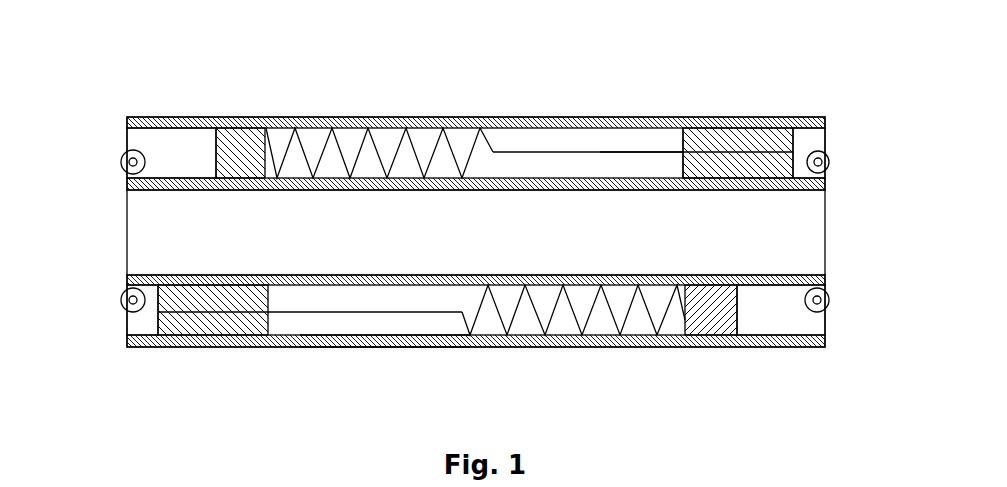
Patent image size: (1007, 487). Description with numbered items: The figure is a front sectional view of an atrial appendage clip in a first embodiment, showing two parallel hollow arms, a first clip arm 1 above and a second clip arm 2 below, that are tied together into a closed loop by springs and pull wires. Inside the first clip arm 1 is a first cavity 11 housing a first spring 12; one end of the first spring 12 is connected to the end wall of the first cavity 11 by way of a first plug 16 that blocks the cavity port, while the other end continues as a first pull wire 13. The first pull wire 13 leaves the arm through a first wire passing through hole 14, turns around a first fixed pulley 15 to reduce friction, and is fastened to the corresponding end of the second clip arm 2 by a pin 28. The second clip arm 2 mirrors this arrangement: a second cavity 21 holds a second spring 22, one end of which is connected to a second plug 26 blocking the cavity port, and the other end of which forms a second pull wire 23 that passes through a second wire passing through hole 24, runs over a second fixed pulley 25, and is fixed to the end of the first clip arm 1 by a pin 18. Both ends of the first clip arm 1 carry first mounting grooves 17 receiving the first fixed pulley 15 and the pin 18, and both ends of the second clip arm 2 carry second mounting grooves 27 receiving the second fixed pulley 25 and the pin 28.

The first clip arm 1 is at (440, 117).
The first cavity 11 is at (567, 138).
The first spring 12 is at (330, 132).
The first pull wire 13 is at (648, 152).
The first wire passing through hole 14 is at (752, 150).
The first fixed pulley 15 is at (830, 160).
The first plug 16 is at (236, 152).
The first mounting groove 17 is at (180, 153).
The pin 18 is at (131, 157).
The second clip arm 2 is at (460, 345).
The second cavity 21 is at (383, 326).
The second spring 22 is at (612, 308).
The second pull wire 23 is at (325, 310).
The second wire passing through hole 24 is at (207, 315).
The second fixed pulley 25 is at (127, 312).
The second plug 26 is at (708, 315).
The second mounting groove 27 is at (139, 326).
The pin 28 is at (828, 305).